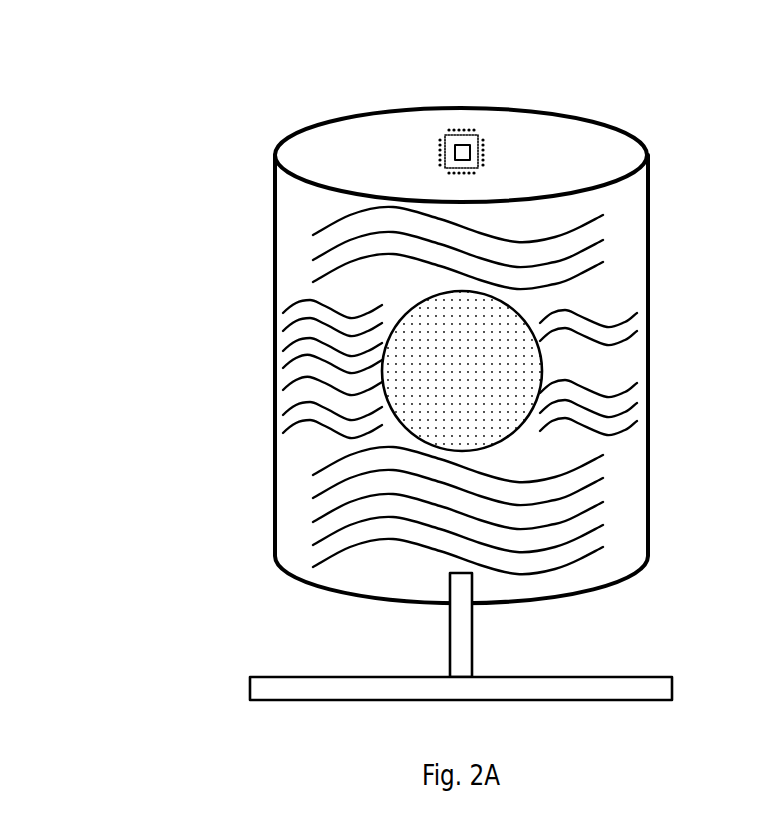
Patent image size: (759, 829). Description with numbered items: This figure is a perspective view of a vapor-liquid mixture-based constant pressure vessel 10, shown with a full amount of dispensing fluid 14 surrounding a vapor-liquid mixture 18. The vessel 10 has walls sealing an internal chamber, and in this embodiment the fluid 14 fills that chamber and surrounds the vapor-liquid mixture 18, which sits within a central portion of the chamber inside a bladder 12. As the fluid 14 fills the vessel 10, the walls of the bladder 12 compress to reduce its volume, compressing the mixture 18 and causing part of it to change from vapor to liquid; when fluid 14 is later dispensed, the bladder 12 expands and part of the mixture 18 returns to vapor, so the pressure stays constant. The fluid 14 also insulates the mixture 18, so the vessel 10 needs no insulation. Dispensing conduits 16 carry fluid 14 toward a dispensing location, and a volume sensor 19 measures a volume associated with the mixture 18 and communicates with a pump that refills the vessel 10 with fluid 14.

The constant pressure vessel 10 is at (160, 105).
The bladder 12 is at (517, 312).
The dispensing fluid 14 is at (315, 202).
The dispensing conduits 16 is at (282, 677).
The vapor-liquid mixture 18 is at (530, 366).
The volume sensor 19 is at (478, 133).